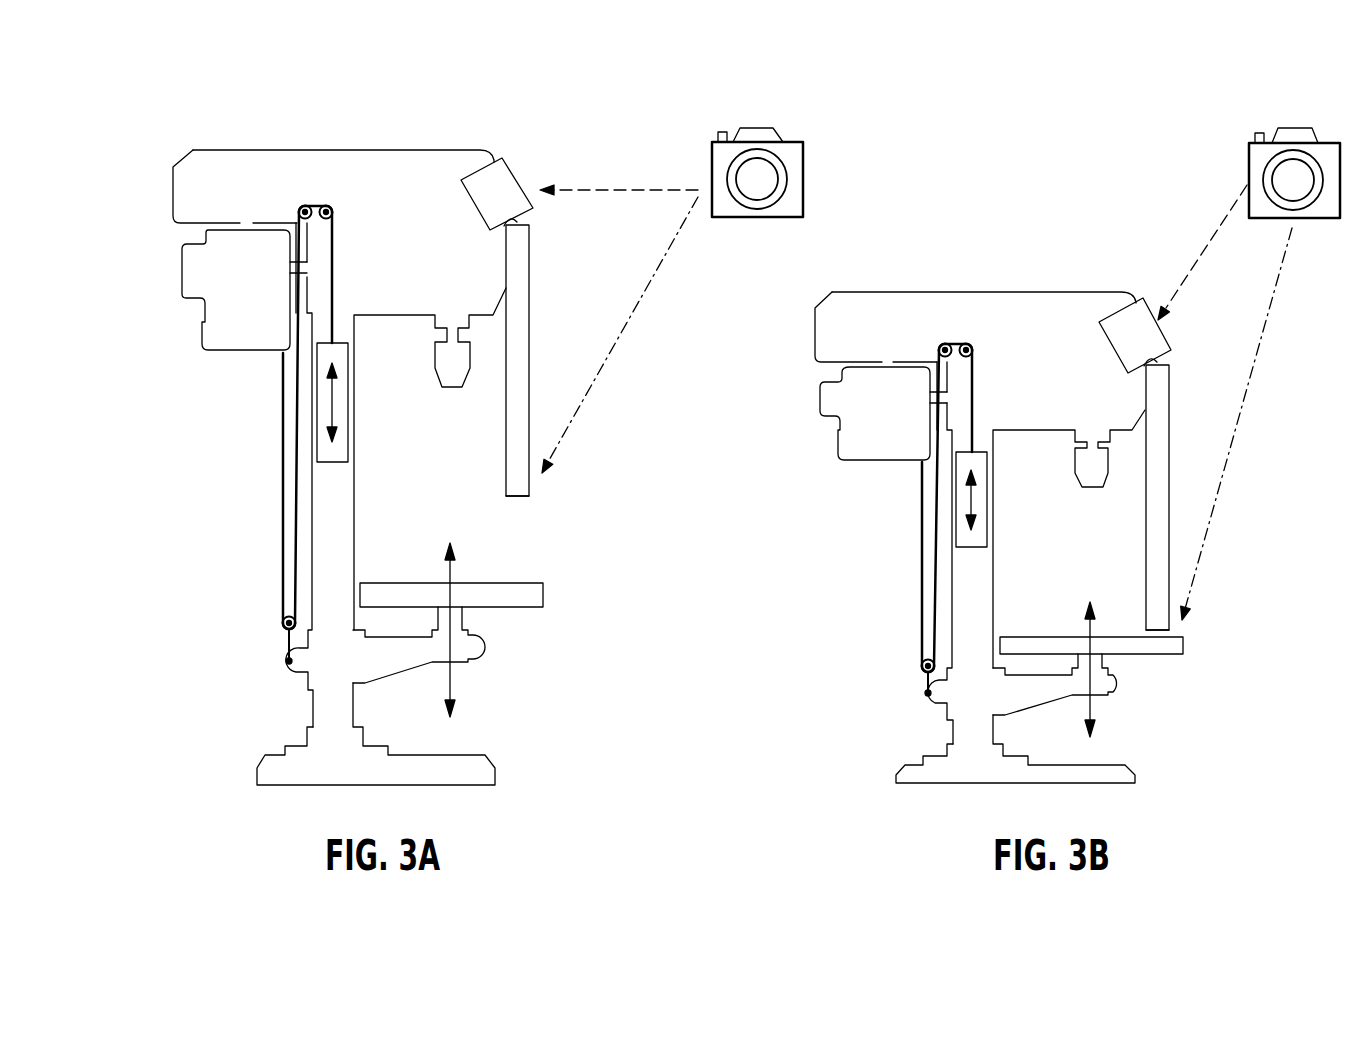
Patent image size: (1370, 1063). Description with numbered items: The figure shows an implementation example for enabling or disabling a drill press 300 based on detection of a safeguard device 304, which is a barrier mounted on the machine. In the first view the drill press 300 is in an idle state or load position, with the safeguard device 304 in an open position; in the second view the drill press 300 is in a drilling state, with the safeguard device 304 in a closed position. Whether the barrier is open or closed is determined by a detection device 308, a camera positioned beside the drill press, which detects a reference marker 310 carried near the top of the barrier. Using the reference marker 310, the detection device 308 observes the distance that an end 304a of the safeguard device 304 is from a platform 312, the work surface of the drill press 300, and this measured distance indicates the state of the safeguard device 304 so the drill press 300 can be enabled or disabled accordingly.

In FIG. 3A, the drill press 300 is at (178, 163).
In FIG. 3B, the drill press 300 is at (815, 307).
In FIG. 3A, the safeguard device 304 is at (530, 293).
In FIG. 3B, the safeguard device 304 is at (1169, 413).
In FIG. 3A, the end of the safeguard device 304a is at (529, 496).
In FIG. 3B, the end of the safeguard device 304a is at (1169, 630).
In FIG. 3A, the detection device 308 is at (801, 142).
In FIG. 3B, the detection device 308 is at (1252, 141).
In FIG. 3A, the reference marker 310 is at (510, 173).
In FIG. 3B, the reference marker 310 is at (1145, 300).
In FIG. 3A, the platform 312 is at (537, 607).
In FIG. 3B, the platform 312 is at (1172, 652).